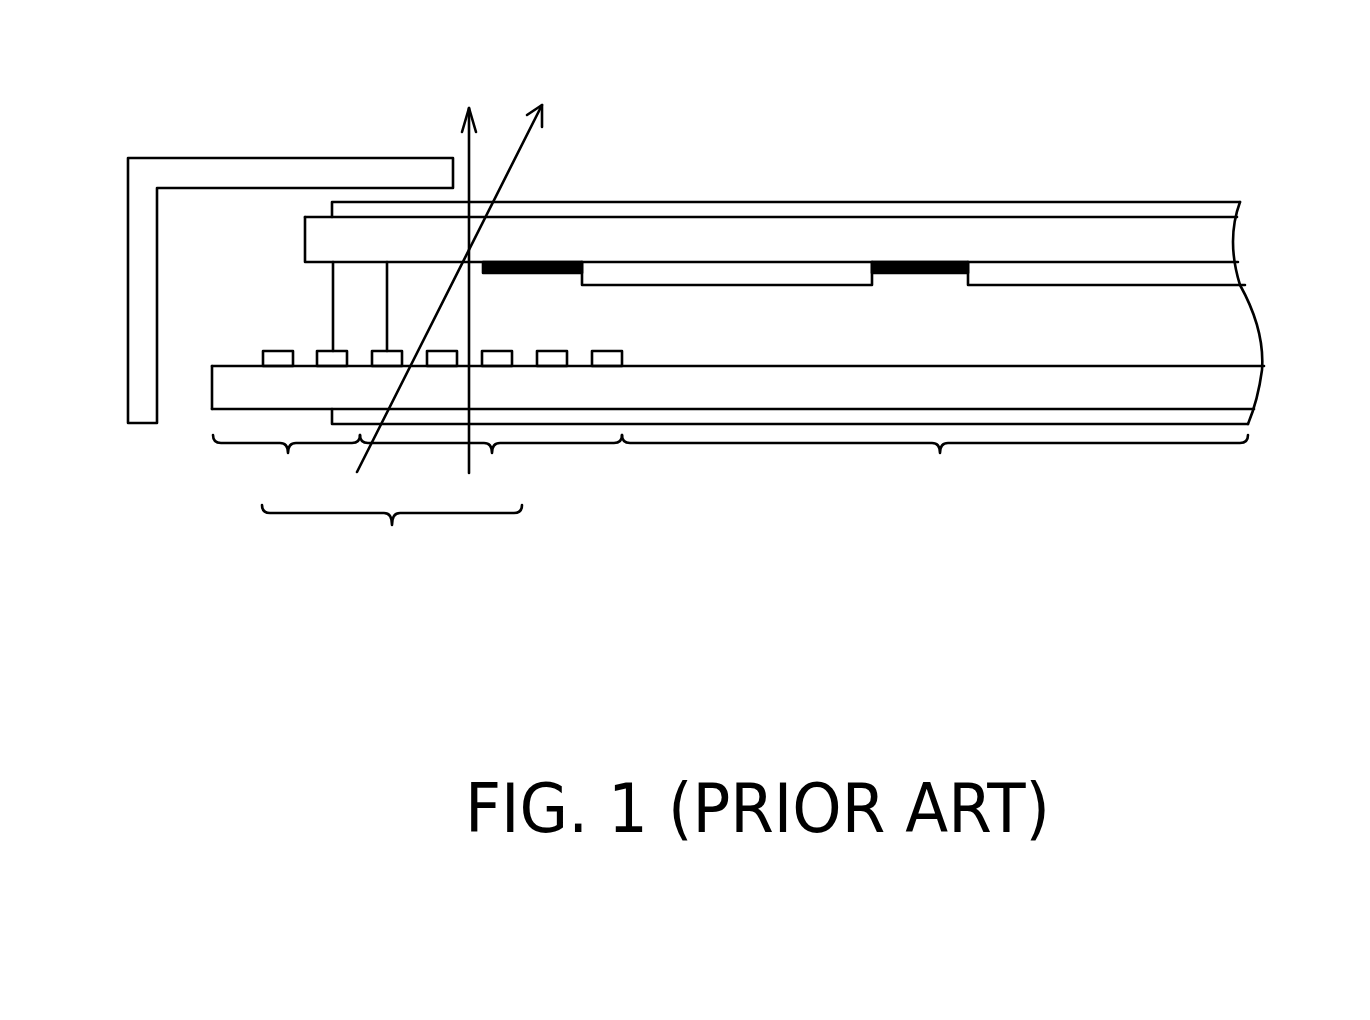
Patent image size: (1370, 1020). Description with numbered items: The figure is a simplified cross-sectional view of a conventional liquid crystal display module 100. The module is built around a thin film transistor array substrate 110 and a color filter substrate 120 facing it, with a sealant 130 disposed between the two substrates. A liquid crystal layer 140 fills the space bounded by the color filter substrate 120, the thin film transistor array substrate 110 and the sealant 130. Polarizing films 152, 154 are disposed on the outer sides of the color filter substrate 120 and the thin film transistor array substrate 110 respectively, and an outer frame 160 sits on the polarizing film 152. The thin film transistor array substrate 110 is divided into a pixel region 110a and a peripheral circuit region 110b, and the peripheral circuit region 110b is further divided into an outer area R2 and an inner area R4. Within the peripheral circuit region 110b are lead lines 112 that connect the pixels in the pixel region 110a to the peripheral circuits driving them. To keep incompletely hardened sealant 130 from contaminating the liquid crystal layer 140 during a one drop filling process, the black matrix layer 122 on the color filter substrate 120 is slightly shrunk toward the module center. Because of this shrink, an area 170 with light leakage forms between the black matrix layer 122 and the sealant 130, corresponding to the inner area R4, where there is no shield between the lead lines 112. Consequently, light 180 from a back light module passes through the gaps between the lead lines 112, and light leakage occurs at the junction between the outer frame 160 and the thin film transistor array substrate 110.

The liquid crystal display module 100 is at (1315, 610).
The thin film transistor array substrate 110 is at (1250, 385).
The pixel region 110a is at (935, 468).
The peripheral circuit region 110b is at (392, 540).
The lead lines 112 is at (610, 360).
The color filter substrate 120 is at (1254, 217).
The black matrix layer 122 is at (550, 260).
The sealant 130 is at (353, 287).
The liquid crystal layer 140 is at (1247, 332).
The polarizing film 152 is at (1228, 208).
The polarizing film 154 is at (1243, 417).
The outer frame 160 is at (252, 175).
The area with light leakage 170 is at (445, 258).
The light 180 is at (469, 157).
The outer area R2 is at (286, 470).
The inner area R4 is at (491, 470).